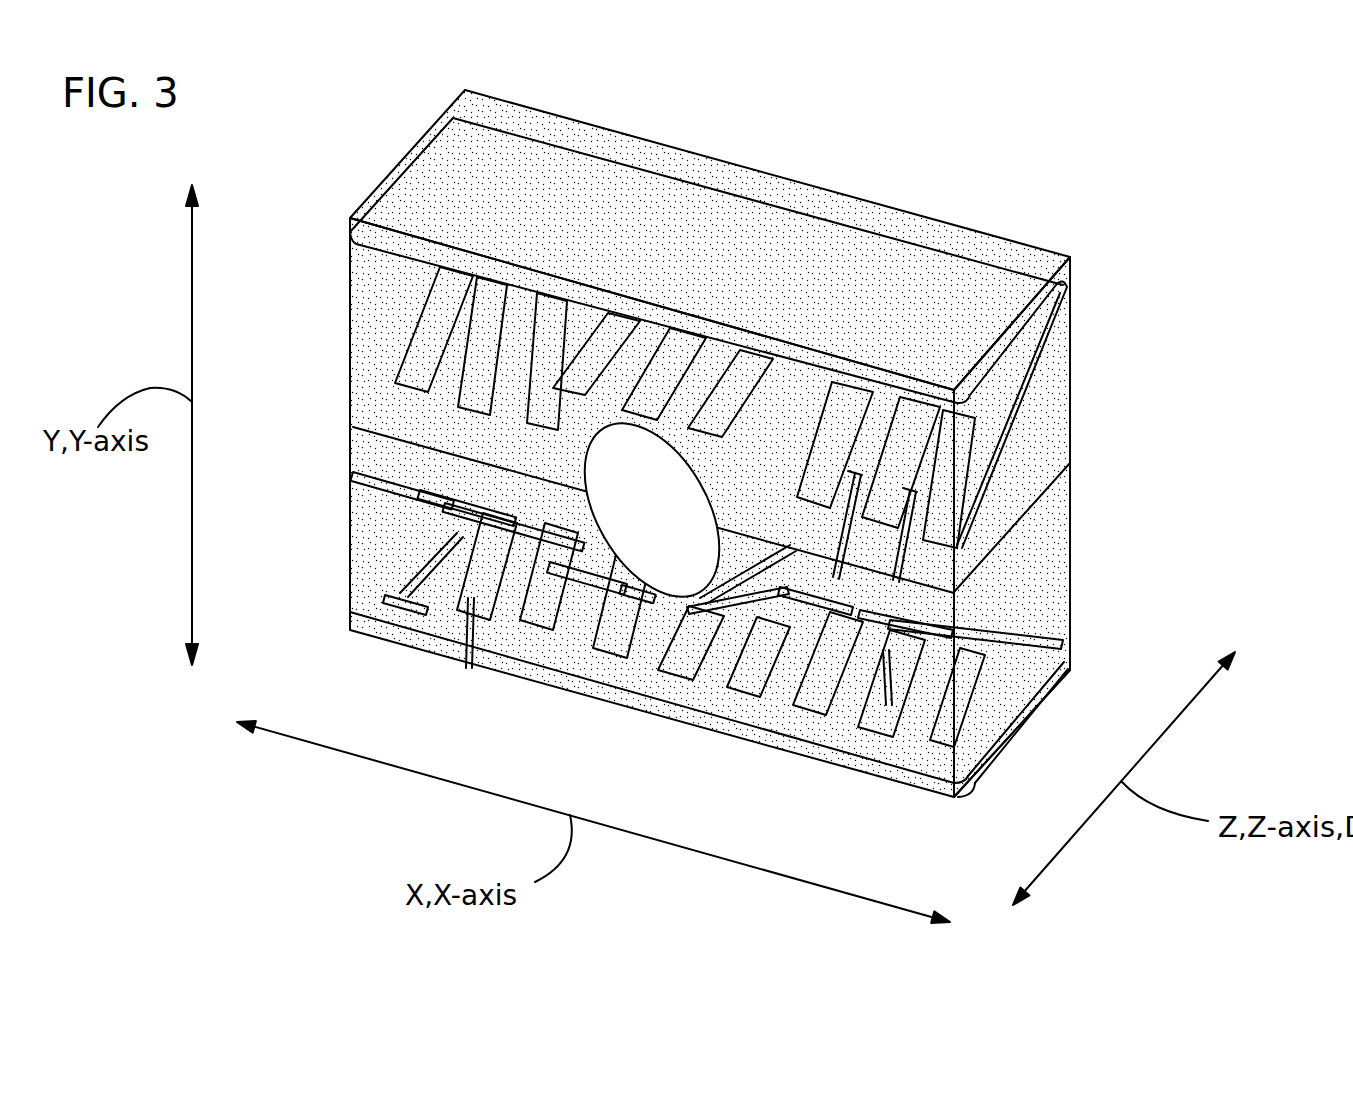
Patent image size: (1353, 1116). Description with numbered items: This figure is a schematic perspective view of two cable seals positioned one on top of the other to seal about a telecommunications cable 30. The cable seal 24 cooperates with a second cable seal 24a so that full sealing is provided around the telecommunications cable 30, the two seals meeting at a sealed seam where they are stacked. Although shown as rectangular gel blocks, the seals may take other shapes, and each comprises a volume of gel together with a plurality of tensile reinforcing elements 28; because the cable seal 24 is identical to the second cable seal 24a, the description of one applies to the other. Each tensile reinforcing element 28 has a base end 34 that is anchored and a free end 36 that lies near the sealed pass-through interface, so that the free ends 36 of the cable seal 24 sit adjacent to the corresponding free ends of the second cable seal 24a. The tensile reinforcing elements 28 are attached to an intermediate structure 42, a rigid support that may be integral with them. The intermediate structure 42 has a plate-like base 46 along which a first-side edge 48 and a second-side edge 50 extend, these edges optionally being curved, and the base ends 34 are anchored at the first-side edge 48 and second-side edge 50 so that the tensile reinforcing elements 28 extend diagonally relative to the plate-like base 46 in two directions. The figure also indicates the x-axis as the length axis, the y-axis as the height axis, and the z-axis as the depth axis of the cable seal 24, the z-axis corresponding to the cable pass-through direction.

The cable seal 24 is at (1090, 556).
The second cable seal 24a is at (1090, 345).
The tensile reinforcing elements 28 is at (435, 333).
The telecommunications cable 30 is at (672, 524).
The base end 34 is at (480, 600).
The free end 36 is at (355, 478).
The intermediate structure 42 is at (1085, 268).
The plate-like base 46 is at (1000, 703).
The first-side edge 48 is at (1070, 648).
The second-side edge 50 is at (387, 597).